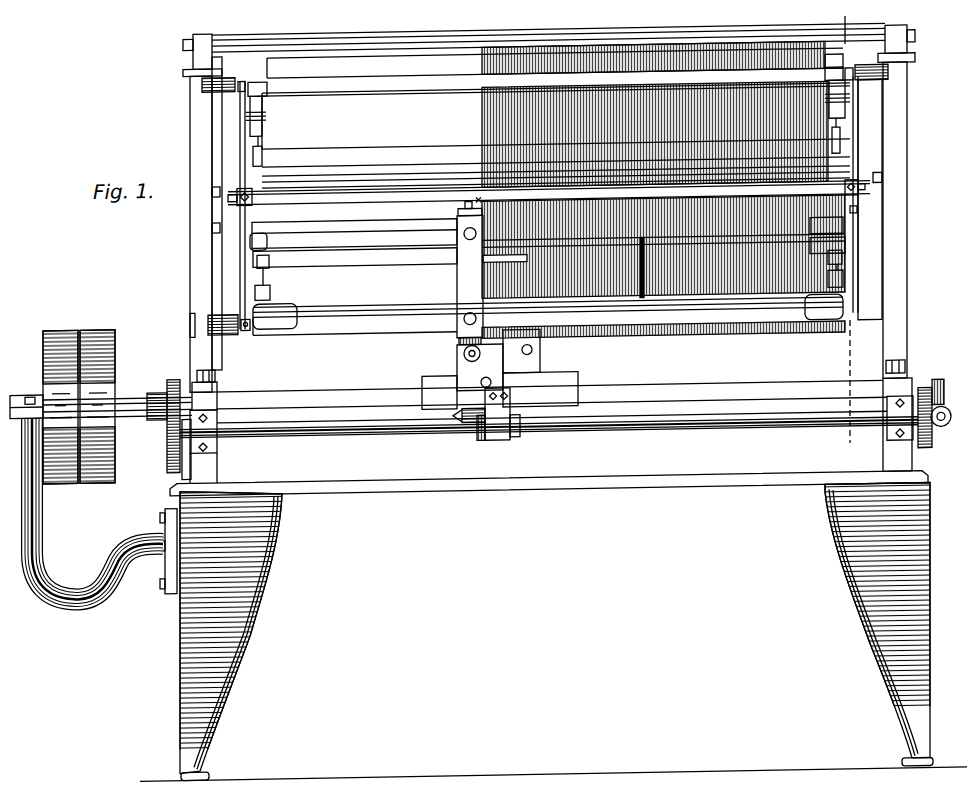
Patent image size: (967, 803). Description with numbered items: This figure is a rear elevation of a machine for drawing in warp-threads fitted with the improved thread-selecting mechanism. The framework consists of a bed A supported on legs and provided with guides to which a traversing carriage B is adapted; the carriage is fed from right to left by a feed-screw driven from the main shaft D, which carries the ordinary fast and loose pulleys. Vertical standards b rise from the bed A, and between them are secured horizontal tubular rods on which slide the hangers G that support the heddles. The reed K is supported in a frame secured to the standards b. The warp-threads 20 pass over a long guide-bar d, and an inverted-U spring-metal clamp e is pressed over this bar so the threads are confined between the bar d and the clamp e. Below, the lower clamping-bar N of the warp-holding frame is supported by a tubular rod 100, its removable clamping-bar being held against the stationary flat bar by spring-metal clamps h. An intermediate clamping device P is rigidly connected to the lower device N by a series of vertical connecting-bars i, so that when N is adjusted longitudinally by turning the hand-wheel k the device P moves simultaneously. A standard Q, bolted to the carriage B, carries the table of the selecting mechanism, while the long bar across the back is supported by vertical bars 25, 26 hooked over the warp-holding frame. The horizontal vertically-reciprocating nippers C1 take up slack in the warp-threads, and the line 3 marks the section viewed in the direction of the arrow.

The bed A is at (555, 457).
The traversing carriage B is at (500, 391).
The main or driving shaft D is at (136, 392).
The hangers G is at (268, 107).
The reed K is at (458, 212).
The lower clamping-bar N is at (363, 332).
The intermediate clamping device P is at (287, 232).
The standard or frame Q is at (470, 288).
The nippers C1 is at (484, 258).
The standards b is at (549, 207).
The guide-bar d is at (446, 88).
The spring-metal clamp e is at (831, 57).
The spring-metal clamps h is at (279, 329).
The vertical connecting-bars i is at (296, 255).
The hand-wheel k is at (190, 321).
The section line 3 is at (878, 456).
The warp-threads 20 is at (486, 116).
The vertical bar 25 is at (242, 228).
The vertical bar 26 is at (846, 220).
The tubular rod 100 is at (247, 330).